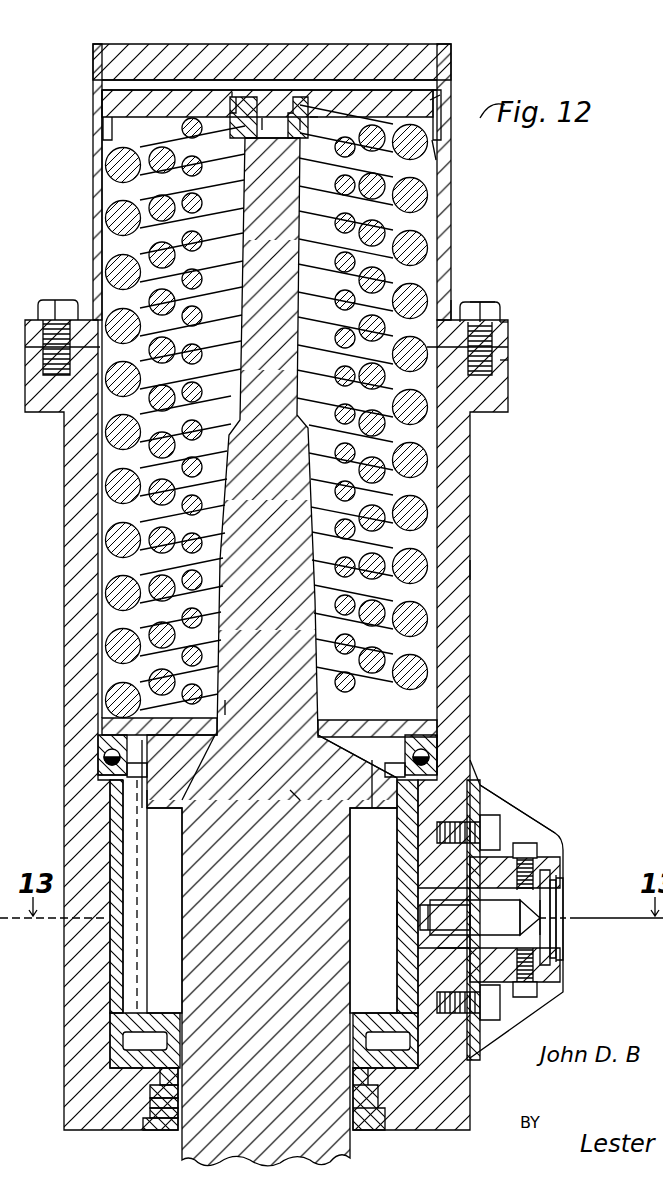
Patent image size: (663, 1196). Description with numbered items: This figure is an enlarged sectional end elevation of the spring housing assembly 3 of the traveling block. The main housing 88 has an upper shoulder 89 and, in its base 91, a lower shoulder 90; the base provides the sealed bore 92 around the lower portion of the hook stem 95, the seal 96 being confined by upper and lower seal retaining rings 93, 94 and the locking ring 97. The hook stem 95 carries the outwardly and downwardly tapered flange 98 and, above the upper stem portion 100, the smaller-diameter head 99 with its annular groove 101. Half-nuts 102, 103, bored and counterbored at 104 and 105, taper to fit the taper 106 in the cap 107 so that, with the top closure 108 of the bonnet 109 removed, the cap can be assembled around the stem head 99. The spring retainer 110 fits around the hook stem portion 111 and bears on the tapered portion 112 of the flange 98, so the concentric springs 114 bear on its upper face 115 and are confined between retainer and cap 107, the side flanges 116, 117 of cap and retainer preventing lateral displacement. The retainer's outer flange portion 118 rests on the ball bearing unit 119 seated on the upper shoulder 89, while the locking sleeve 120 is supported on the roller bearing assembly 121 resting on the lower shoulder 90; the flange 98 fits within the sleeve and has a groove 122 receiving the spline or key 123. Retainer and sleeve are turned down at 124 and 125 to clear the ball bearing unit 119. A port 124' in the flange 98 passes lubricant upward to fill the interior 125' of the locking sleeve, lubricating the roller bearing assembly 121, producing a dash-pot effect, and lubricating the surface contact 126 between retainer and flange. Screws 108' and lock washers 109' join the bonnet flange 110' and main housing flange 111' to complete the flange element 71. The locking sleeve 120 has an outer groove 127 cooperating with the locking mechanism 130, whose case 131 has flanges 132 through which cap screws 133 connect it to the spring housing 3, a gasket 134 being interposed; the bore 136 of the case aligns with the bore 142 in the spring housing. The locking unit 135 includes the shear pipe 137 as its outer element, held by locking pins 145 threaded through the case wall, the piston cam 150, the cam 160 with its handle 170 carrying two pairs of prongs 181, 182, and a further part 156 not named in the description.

The spring housing assembly 3 is at (476, 558).
The flange element 71 is at (520, 334).
The main housing 88 is at (66, 614).
The upper shoulder 89 is at (110, 781).
The lower shoulder 90 is at (133, 1066).
The base 91 is at (402, 1102).
The sealed bore 92 is at (182, 1096).
The upper seal retaining ring 93 is at (176, 1077).
The lower seal retaining ring 94 is at (178, 1115).
The hook stem 95 is at (288, 1085).
The seal 96 is at (180, 1104).
The locking ring 97 is at (160, 1130).
The flange 98 is at (286, 786).
The head 99 is at (255, 108).
The upper stem portion 100 is at (275, 659).
The annular groove 101 is at (276, 130).
The half-nut 102 is at (238, 96).
The half-nut 103 is at (301, 105).
The bore 104 is at (262, 115).
The counterbore 105 is at (298, 112).
The taper 106 is at (312, 117).
The cap 107 is at (440, 96).
The top closure 108 is at (299, 91).
The bonnet 109 is at (266, 587).
The spring retainer 110 is at (411, 740).
The bonnet flange 110' is at (459, 294).
The screws 108' is at (495, 286).
The lock washers 109' is at (525, 307).
The hook stem portion 111 is at (241, 693).
The main housing flange 111' is at (527, 355).
The tapered portion 112 is at (190, 742).
The concentric springs 114 is at (412, 515).
The upper face 115 is at (323, 725).
The side flange 116 is at (435, 140).
The side flange 117 is at (432, 730).
The outer flange portion 118 is at (98, 740).
The ball bearing unit 119 is at (100, 758).
The locking sleeve 120 is at (112, 827).
The roller bearing assembly 121 is at (160, 1013).
The groove 122 is at (164, 910).
The spline or key 123 is at (140, 882).
The turned-down portion 124 is at (180, 774).
The port 124' is at (373, 886).
The turned-down portion 125 is at (183, 795).
The interior 125' is at (386, 920).
The surface contact 126 is at (357, 757).
The groove 127 is at (389, 896).
The locking mechanism 130 is at (570, 861).
The case 131 is at (548, 812).
The flanges 132 is at (481, 803).
The cap screws 133 is at (498, 838).
The gasket or seal 134 is at (477, 780).
The locking unit 135 is at (568, 901).
The bore 136 is at (515, 920).
The shear pipe 137 is at (438, 948).
The bore 142 is at (444, 905).
The locking pins 145 is at (540, 1003).
The piston cam 150 is at (463, 925).
The valve head 156 is at (428, 915).
The cam 160 is at (524, 917).
The handle 170 is at (562, 927).
The prongs 181 is at (563, 944).
The prongs 182 is at (558, 918).